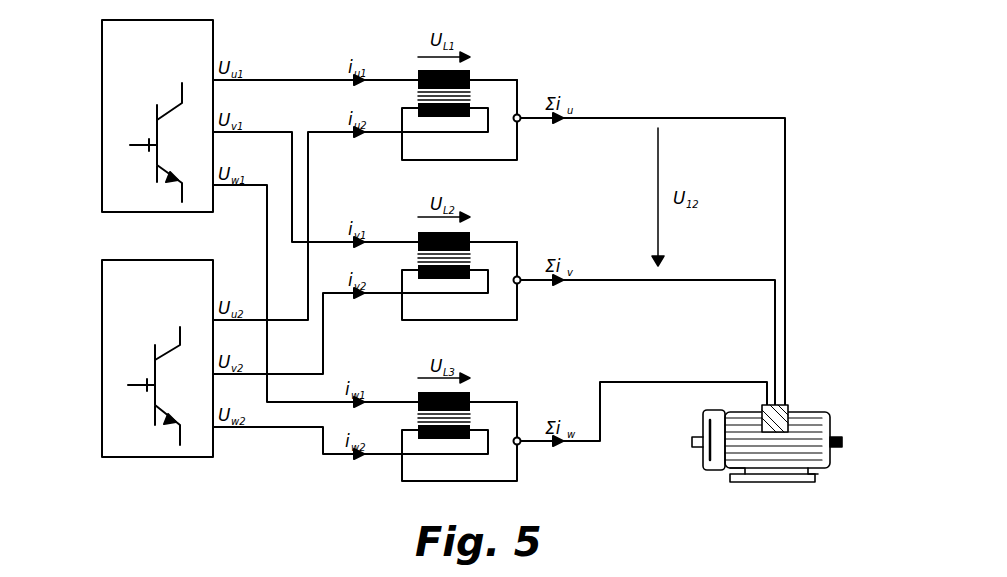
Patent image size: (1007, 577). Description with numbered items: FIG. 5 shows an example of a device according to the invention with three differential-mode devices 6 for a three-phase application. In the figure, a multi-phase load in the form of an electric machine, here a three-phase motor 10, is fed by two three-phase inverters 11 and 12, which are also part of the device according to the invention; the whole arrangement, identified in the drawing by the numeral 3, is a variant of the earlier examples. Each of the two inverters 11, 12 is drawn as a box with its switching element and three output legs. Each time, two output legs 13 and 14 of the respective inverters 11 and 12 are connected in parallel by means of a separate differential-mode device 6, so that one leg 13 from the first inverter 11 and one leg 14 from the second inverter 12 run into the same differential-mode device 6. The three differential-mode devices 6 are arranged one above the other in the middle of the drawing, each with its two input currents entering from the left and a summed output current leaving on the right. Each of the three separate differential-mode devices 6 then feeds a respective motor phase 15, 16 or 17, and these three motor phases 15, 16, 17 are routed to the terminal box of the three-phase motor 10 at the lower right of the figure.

The drive system 3 is at (776, 465).
The differential-mode device 6 is at (504, 58).
The 3-phase motor 10 is at (807, 425).
The 3-phase inverter 11 is at (115, 77).
The 3-phase inverter 12 is at (108, 305).
The output legs 13 is at (252, 185).
The output legs 14 is at (300, 320).
The motor phase 15 is at (735, 118).
The motor phase 16 is at (708, 280).
The motor phase 17 is at (697, 382).